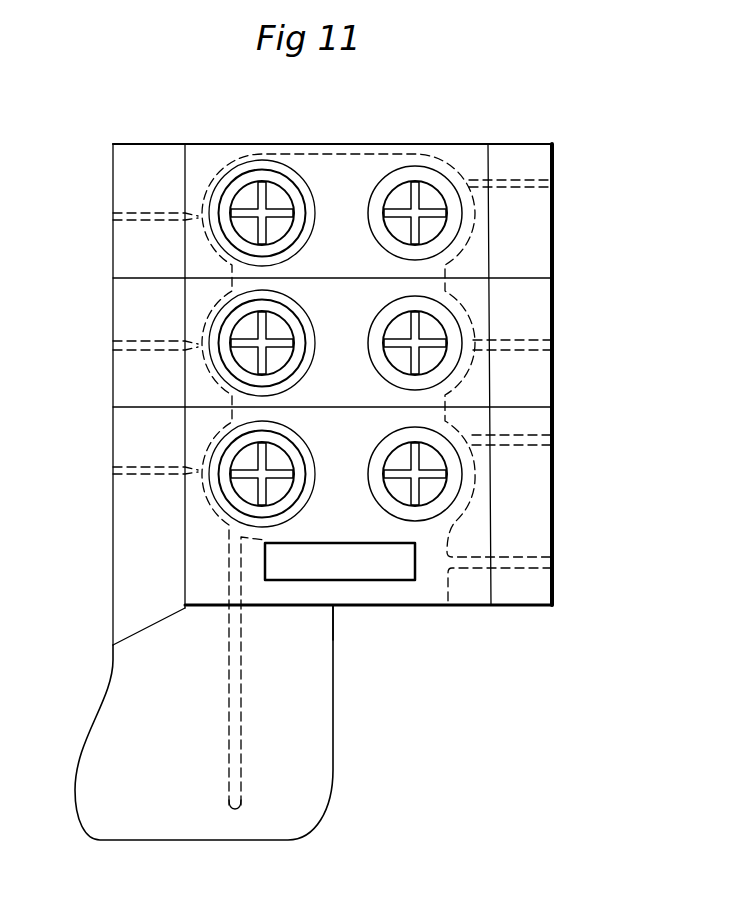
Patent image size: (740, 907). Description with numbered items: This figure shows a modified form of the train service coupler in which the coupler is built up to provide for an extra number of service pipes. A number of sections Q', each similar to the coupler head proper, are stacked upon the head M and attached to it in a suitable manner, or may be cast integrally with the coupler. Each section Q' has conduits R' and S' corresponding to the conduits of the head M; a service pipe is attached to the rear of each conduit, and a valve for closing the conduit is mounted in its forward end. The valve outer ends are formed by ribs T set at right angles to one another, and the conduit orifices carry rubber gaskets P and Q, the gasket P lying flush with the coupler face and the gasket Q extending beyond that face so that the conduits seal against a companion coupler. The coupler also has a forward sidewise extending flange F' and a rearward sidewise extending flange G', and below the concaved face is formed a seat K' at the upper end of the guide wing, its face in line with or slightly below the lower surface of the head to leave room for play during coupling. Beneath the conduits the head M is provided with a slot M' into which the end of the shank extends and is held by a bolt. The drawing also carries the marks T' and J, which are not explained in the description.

The boss with cross-shaped opening R' is at (270, 188).
The cross-shaped opening S' is at (415, 184).
The plate body Q' is at (356, 377).
The side wall G' is at (395, 374).
The channel outline P is at (440, 449).
The cross bar T' is at (437, 474).
The ring Q is at (281, 474).
The cross bar T is at (281, 475).
The shoulder K' is at (336, 625).
The slot M' is at (351, 594).
The passage M is at (500, 606).
The chamfer F' is at (122, 626).
The tongue J is at (93, 760).